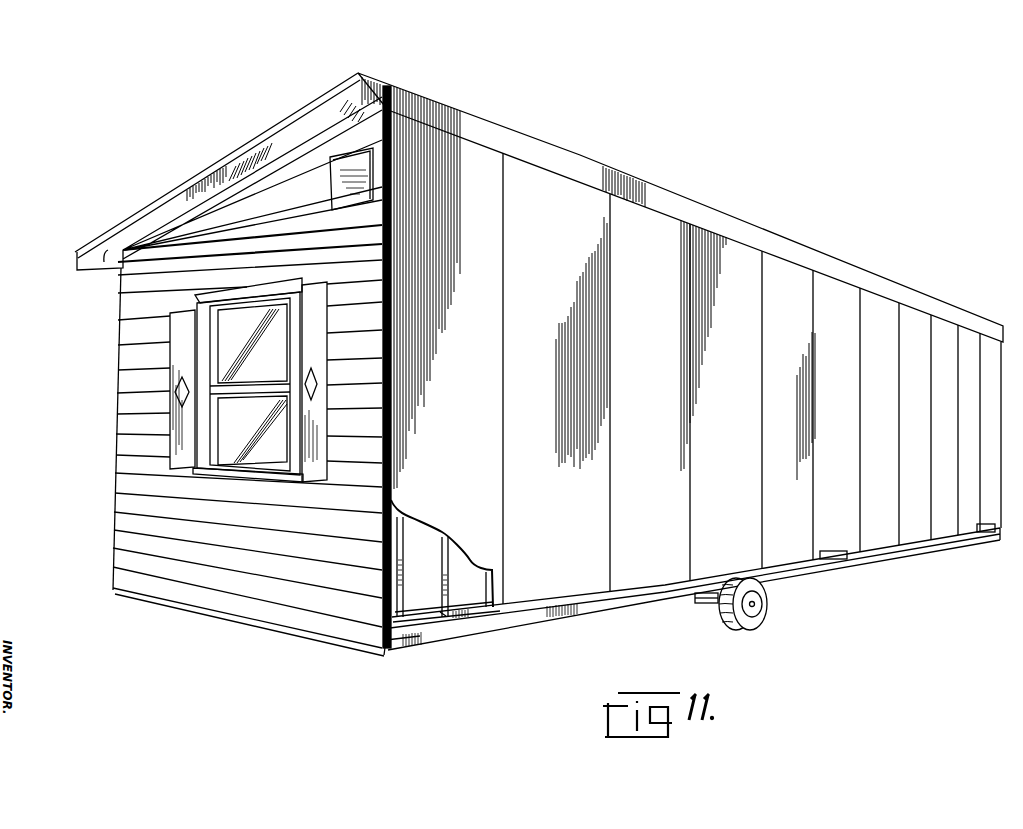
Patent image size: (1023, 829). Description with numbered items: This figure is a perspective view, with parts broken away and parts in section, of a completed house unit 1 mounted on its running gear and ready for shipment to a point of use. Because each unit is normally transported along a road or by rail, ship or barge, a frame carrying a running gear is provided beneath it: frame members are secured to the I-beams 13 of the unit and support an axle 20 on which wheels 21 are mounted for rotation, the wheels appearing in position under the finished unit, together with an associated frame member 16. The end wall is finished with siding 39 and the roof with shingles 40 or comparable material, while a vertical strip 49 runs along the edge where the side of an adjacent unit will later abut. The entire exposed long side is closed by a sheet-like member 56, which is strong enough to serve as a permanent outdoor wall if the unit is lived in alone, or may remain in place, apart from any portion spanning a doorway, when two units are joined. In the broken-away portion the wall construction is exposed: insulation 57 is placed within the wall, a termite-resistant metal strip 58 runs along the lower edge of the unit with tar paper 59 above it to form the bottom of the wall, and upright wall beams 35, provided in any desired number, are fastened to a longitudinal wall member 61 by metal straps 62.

The house unit 1 is at (712, 207).
The I-beams 13 is at (590, 615).
The axle support bracket 16 is at (628, 607).
The axle 20 is at (755, 602).
The wheels 21 is at (752, 627).
The vertical frame members 35 is at (450, 547).
The siding 39 is at (117, 367).
The shingles 40 is at (200, 153).
The vertical strip 49 is at (396, 101).
The sheet-like member 56 is at (558, 181).
The insulation 57 is at (413, 532).
The metal strip 58 is at (400, 642).
The tar paper 59 is at (472, 620).
The longitudinal wall member 61 is at (480, 611).
The metal straps 62 is at (381, 649).